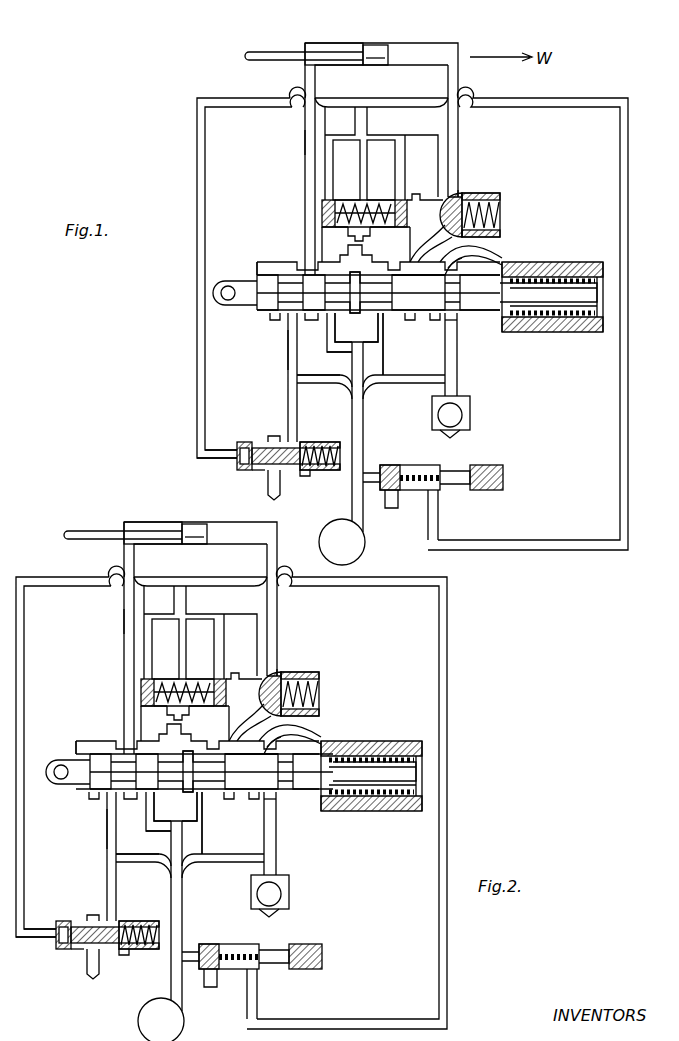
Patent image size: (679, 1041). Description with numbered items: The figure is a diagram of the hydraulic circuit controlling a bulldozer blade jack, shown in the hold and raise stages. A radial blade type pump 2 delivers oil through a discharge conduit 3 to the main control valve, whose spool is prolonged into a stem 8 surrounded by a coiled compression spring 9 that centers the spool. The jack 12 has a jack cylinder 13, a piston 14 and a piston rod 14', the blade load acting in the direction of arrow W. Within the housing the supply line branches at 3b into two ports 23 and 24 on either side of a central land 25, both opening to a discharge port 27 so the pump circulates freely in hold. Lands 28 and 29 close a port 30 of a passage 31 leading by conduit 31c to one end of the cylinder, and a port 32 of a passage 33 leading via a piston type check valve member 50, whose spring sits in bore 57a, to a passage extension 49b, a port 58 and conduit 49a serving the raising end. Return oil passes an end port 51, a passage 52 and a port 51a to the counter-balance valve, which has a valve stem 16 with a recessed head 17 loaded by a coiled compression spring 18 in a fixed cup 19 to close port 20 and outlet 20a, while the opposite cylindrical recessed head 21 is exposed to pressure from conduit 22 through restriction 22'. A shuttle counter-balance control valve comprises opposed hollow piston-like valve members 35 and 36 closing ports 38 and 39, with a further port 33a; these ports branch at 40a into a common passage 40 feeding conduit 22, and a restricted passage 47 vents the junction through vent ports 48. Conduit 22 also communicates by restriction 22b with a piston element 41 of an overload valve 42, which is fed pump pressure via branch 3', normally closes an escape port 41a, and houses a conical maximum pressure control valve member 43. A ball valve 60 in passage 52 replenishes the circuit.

In FIG. 1, the radial blade type pump 2 is at (348, 552).
In FIG. 2, the radial blade type pump 2 is at (161, 1019).
In FIG. 1, the discharge conduit 3 is at (367, 437).
In FIG. 2, the discharge conduit 3 is at (186, 916).
In FIG. 1, the branch 3' is at (371, 459).
In FIG. 2, the branch 3' is at (190, 938).
In FIG. 1, the branch of supply line 3b is at (338, 350).
In FIG. 2, the branch of supply line 3b is at (124, 847).
In FIG. 1, the stem 8 is at (540, 322).
In FIG. 2, the stem 8 is at (371, 810).
In FIG. 1, the coiled compression spring 9 is at (560, 272).
In FIG. 2, the coiled compression spring 9 is at (371, 762).
In FIG. 1, the jack 12 is at (455, 42).
In FIG. 2, the jack 12 is at (200, 625).
In FIG. 1, the jack cylinder 13 is at (340, 43).
In FIG. 2, the jack cylinder 13 is at (153, 519).
In FIG. 1, the piston 14 is at (388, 71).
In FIG. 2, the piston 14 is at (207, 550).
In FIG. 1, the piston rod 14' is at (304, 40).
In FIG. 2, the piston rod 14' is at (123, 519).
In FIG. 1, the valve stem 16 is at (262, 472).
In FIG. 2, the valve stem 16 is at (67, 963).
In FIG. 1, the recessed head 17 is at (310, 448).
In FIG. 2, the recessed head 17 is at (108, 910).
In FIG. 1, the coiled compression spring 18 is at (325, 445).
In FIG. 2, the coiled compression spring 18 is at (147, 913).
In FIG. 1, the fixed cup or abutment member 19 is at (336, 444).
In FIG. 2, the fixed cup or abutment member 19 is at (145, 923).
In FIG. 1, the port 20 is at (280, 440).
In FIG. 2, the port 20 is at (111, 932).
In FIG. 1, the outlet 20a is at (282, 490).
In FIG. 2, the outlet 20a is at (112, 970).
In FIG. 1, the cylindrical recessed head 21 is at (248, 442).
In FIG. 2, the cylindrical recessed head 21 is at (52, 919).
In FIG. 1, the conduit 22 is at (251, 272).
In FIG. 2, the conduit 22 is at (70, 751).
In FIG. 1, the restriction 22' is at (217, 466).
In FIG. 2, the restriction 22' is at (36, 945).
In FIG. 1, the restriction 22b is at (440, 496).
In FIG. 2, the restriction 22b is at (277, 994).
In FIG. 1, the port 23 is at (326, 318).
In FIG. 2, the port 23 is at (134, 806).
In FIG. 1, the port 24 is at (382, 318).
In FIG. 2, the port 24 is at (216, 823).
In FIG. 1, the central land 25 is at (356, 327).
In FIG. 2, the central land 25 is at (175, 806).
In FIG. 1, the discharge port 27 is at (363, 262).
In FIG. 2, the discharge port 27 is at (200, 756).
In FIG. 1, the land 28 is at (288, 313).
In FIG. 2, the land 28 is at (94, 804).
In FIG. 1, the land 29 is at (422, 318).
In FIG. 2, the land 29 is at (242, 806).
In FIG. 1, the port 30 is at (322, 255).
In FIG. 2, the port 30 is at (160, 720).
In FIG. 1, the passage 31 is at (322, 222).
In FIG. 2, the passage 31 is at (151, 690).
In FIG. 1, the conduit 31c is at (305, 142).
In FIG. 2, the conduit 31c is at (105, 621).
In FIG. 1, the port 32 is at (418, 288).
In FIG. 2, the port 32 is at (251, 767).
In FIG. 1, the passage 33 is at (500, 248).
In FIG. 2, the passage 33 is at (300, 722).
In FIG. 1, the port 33a is at (446, 197).
In FIG. 2, the port 33a is at (297, 648).
In FIG. 1, the hollow piston-like valve member 35 is at (346, 170).
In FIG. 2, the hollow piston-like valve member 35 is at (165, 649).
In FIG. 1, the hollow piston-like valve member 36 is at (400, 200).
In FIG. 2, the hollow piston-like valve member 36 is at (237, 663).
In FIG. 1, the port 38 is at (325, 200).
In FIG. 2, the port 38 is at (122, 674).
In FIG. 1, the port 39 is at (418, 197).
In FIG. 2, the port 39 is at (246, 660).
In FIG. 1, the common passage 40 is at (358, 118).
In FIG. 2, the common passage 40 is at (160, 617).
In FIG. 1, the branch 40a is at (372, 135).
In FIG. 2, the branch 40a is at (221, 632).
In FIG. 1, the piston element 41 is at (392, 465).
In FIG. 2, the piston element 41 is at (229, 939).
In FIG. 1, the escape port 41a is at (393, 500).
In FIG. 2, the escape port 41a is at (220, 988).
In FIG. 1, the overload valve 42 is at (462, 466).
In FIG. 2, the overload valve 42 is at (254, 944).
In FIG. 1, the conical maximum pressure control valve member 43 is at (475, 468).
In FIG. 2, the conical maximum pressure control valve member 43 is at (309, 944).
In FIG. 1, the restricted passage 47 is at (381, 170).
In FIG. 2, the restricted passage 47 is at (200, 649).
In FIG. 1, the vent ports 48 is at (352, 239).
In FIG. 2, the vent ports 48 is at (165, 722).
In FIG. 1, the conduit 49a is at (462, 125).
In FIG. 2, the conduit 49a is at (290, 797).
In FIG. 1, the passage extension 49b is at (490, 248).
In FIG. 2, the passage extension 49b is at (319, 716).
In FIG. 1, the piston type check valve member 50 is at (458, 193).
In FIG. 2, the piston type check valve member 50 is at (287, 679).
In FIG. 1, the end port 51 is at (306, 275).
In FIG. 2, the end port 51 is at (100, 741).
In FIG. 1, the port 51a is at (458, 318).
In FIG. 2, the port 51a is at (289, 811).
In FIG. 1, the passage 52 is at (290, 355).
In FIG. 2, the passage 52 is at (95, 829).
In FIG. 1, the bore 57a is at (494, 200).
In FIG. 2, the bore 57a is at (319, 682).
In FIG. 1, the port 58 is at (456, 268).
In FIG. 2, the port 58 is at (286, 747).
In FIG. 1, the ball valve 60 is at (470, 418).
In FIG. 2, the ball valve 60 is at (289, 896).